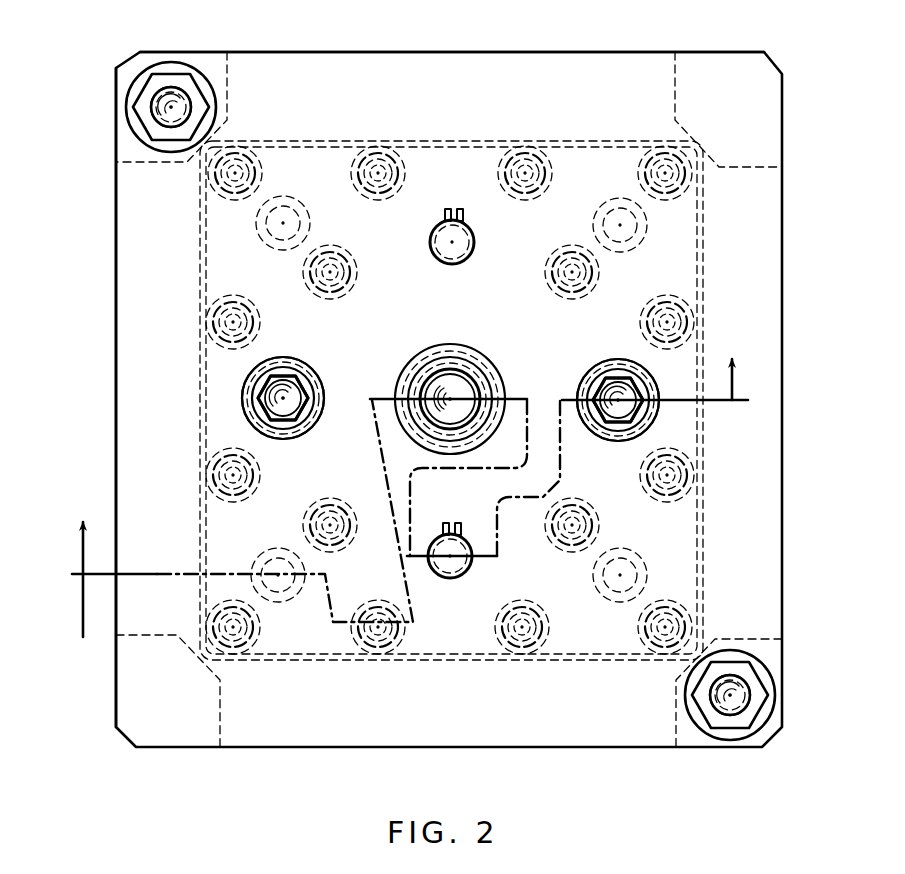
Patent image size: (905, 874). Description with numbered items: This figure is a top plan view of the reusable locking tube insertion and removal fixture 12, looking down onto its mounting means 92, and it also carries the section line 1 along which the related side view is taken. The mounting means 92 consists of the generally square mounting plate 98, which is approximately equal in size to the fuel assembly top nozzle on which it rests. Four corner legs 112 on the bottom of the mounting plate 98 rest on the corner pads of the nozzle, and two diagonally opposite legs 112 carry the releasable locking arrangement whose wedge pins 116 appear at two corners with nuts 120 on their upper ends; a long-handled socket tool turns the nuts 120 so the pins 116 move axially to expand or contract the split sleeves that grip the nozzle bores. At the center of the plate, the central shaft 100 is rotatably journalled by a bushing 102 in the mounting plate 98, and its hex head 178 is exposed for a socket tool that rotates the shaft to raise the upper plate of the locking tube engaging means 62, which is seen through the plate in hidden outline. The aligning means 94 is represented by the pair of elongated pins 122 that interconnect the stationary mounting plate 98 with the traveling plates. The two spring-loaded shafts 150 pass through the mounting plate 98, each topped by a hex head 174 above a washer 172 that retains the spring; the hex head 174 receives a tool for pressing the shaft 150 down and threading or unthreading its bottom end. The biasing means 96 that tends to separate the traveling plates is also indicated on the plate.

The fixture 12 is at (610, 44).
The mounting means 92 is at (296, 48).
The mounting plate 98 is at (116, 260).
The aligning means 94 is at (455, 188).
The corner legs 112 is at (116, 178).
The nuts 120 is at (172, 74).
The wedge pins 116 is at (163, 99).
The locking tube engaging means 62 is at (530, 146).
The biasing means 96 is at (276, 196).
The elongated pins 122 is at (463, 244).
The spring-loaded shafts 150 is at (258, 402).
The hex head 174 is at (283, 386).
The washer 172 is at (305, 426).
The central shaft 100 is at (480, 372).
The bushing 102 is at (410, 358).
The hex head 178 is at (450, 382).
The section line 1- 1 is at (410, 513).